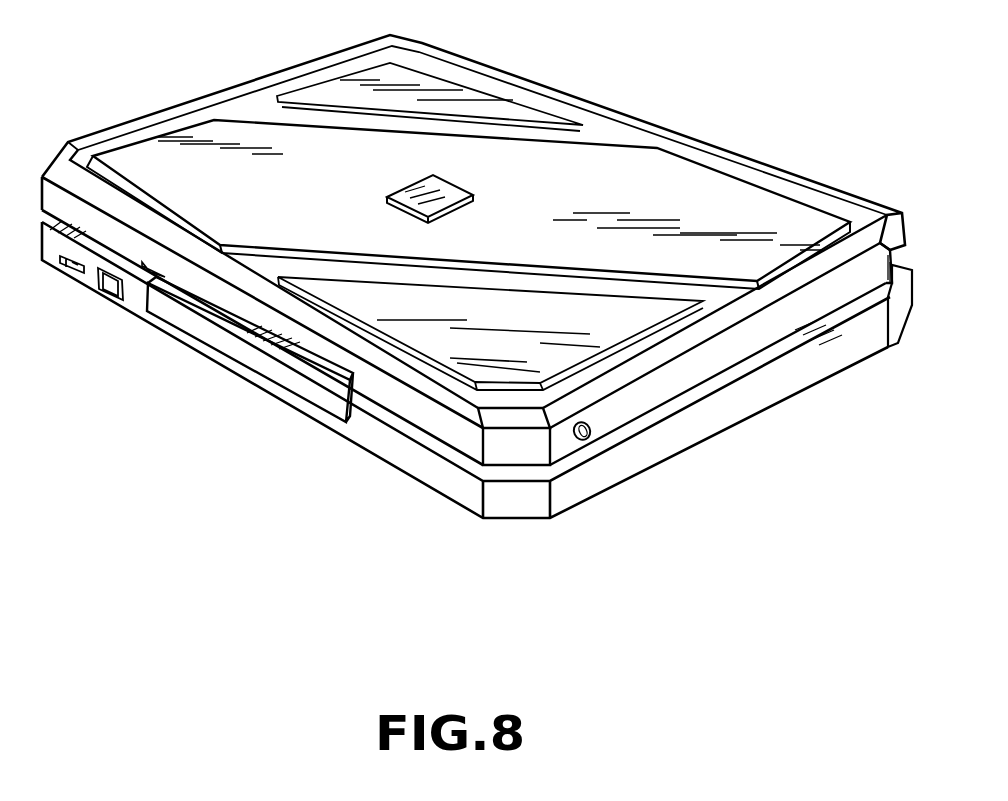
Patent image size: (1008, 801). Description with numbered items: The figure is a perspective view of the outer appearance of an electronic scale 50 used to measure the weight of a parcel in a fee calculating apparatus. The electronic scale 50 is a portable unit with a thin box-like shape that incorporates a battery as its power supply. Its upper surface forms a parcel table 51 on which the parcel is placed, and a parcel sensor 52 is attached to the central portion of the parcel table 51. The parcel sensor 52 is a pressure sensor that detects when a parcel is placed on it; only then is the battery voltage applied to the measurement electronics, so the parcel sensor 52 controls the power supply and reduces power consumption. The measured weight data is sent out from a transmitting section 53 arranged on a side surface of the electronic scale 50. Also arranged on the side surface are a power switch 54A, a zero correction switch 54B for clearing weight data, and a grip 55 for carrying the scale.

The electronic scale 50 is at (606, 103).
The parcel table 51 is at (703, 187).
The parcel sensor 52 is at (450, 193).
The transmitting section 53 is at (588, 441).
The power switch 54A is at (63, 268).
The "0" correction switch 54B is at (107, 297).
The grip 55 is at (240, 368).